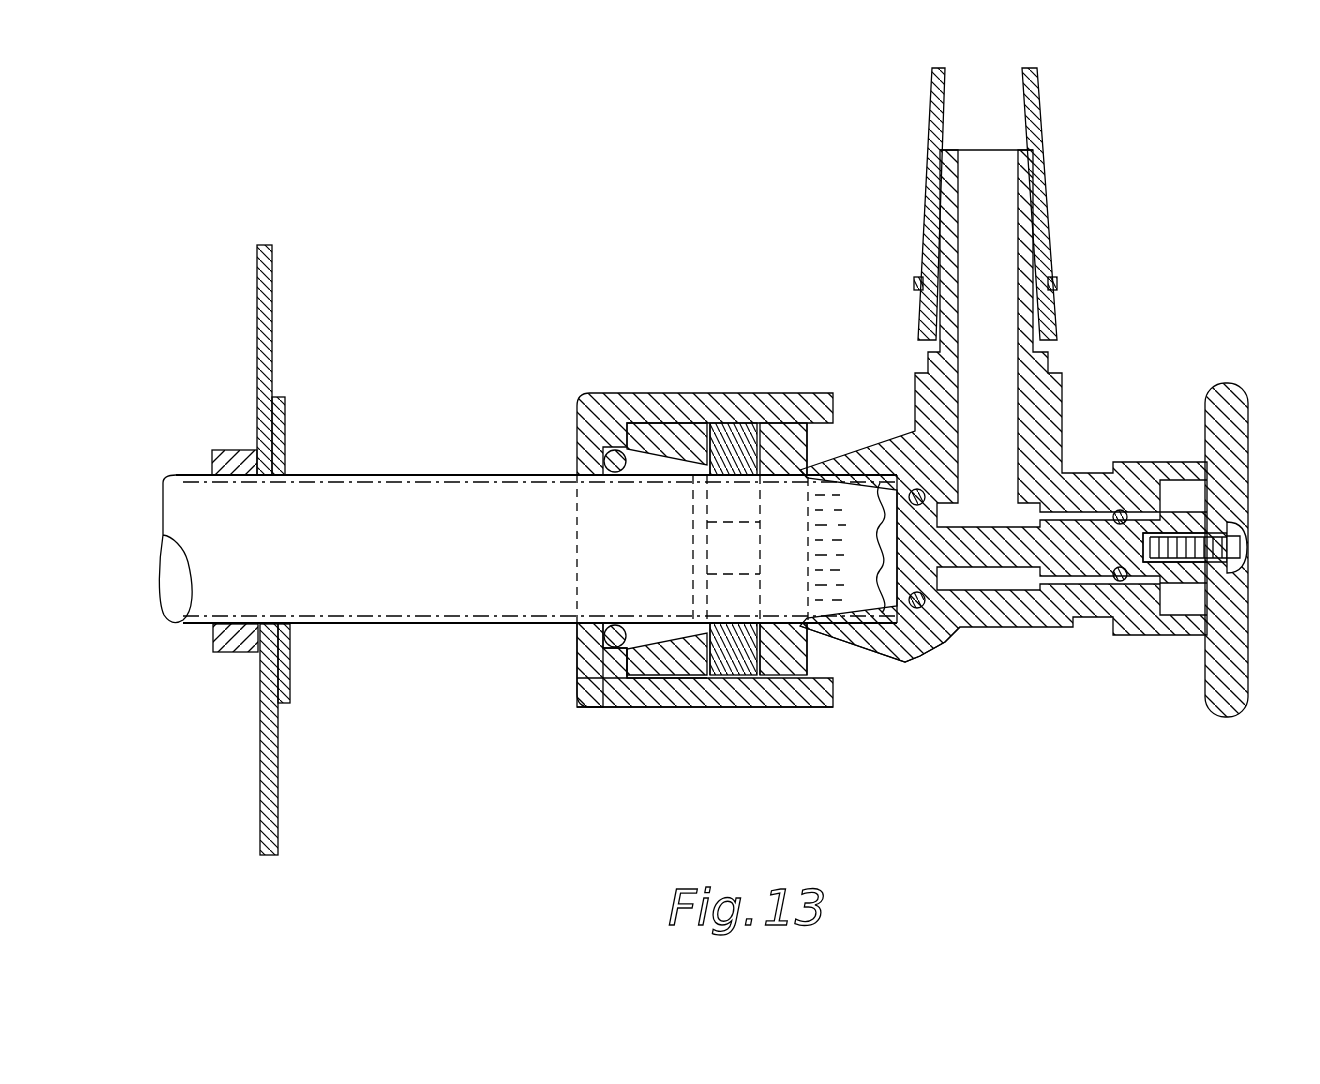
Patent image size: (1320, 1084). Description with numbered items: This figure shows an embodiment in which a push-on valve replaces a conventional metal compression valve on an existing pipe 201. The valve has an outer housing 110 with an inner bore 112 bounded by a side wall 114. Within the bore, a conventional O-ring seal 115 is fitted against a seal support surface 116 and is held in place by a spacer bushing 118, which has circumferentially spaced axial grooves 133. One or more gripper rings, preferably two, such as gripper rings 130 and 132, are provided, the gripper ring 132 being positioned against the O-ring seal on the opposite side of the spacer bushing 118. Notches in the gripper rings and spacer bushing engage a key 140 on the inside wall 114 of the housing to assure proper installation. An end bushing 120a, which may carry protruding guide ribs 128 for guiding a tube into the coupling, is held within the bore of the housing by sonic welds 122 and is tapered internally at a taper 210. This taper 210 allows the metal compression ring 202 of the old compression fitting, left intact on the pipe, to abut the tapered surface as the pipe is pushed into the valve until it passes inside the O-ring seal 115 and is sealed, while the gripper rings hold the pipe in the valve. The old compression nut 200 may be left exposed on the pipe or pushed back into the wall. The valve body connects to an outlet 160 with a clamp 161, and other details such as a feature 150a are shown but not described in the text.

The compression nut 200 is at (214, 460).
The tube 201 is at (330, 496).
The metal compression ring 202 is at (606, 463).
The taper 210 is at (610, 414).
The guide ribs 128 is at (666, 432).
The gripper ring 130 is at (702, 428).
The sleeve end face 150a is at (712, 425).
The key 140 is at (743, 430).
The spacer bushing 118 is at (762, 425).
The gripper ring 132 is at (818, 416).
The O-ring seal 115 is at (832, 410).
The inner bore 112 is at (905, 664).
The hose 160 is at (1052, 198).
The clamp 161 is at (1060, 278).
The nut collar 120a is at (578, 688).
The sonic welds 122 is at (613, 707).
The side wall 114 is at (630, 684).
The outer housing 110 is at (707, 703).
The axial grooves 133 is at (767, 693).
The seal support surface 116 is at (840, 667).